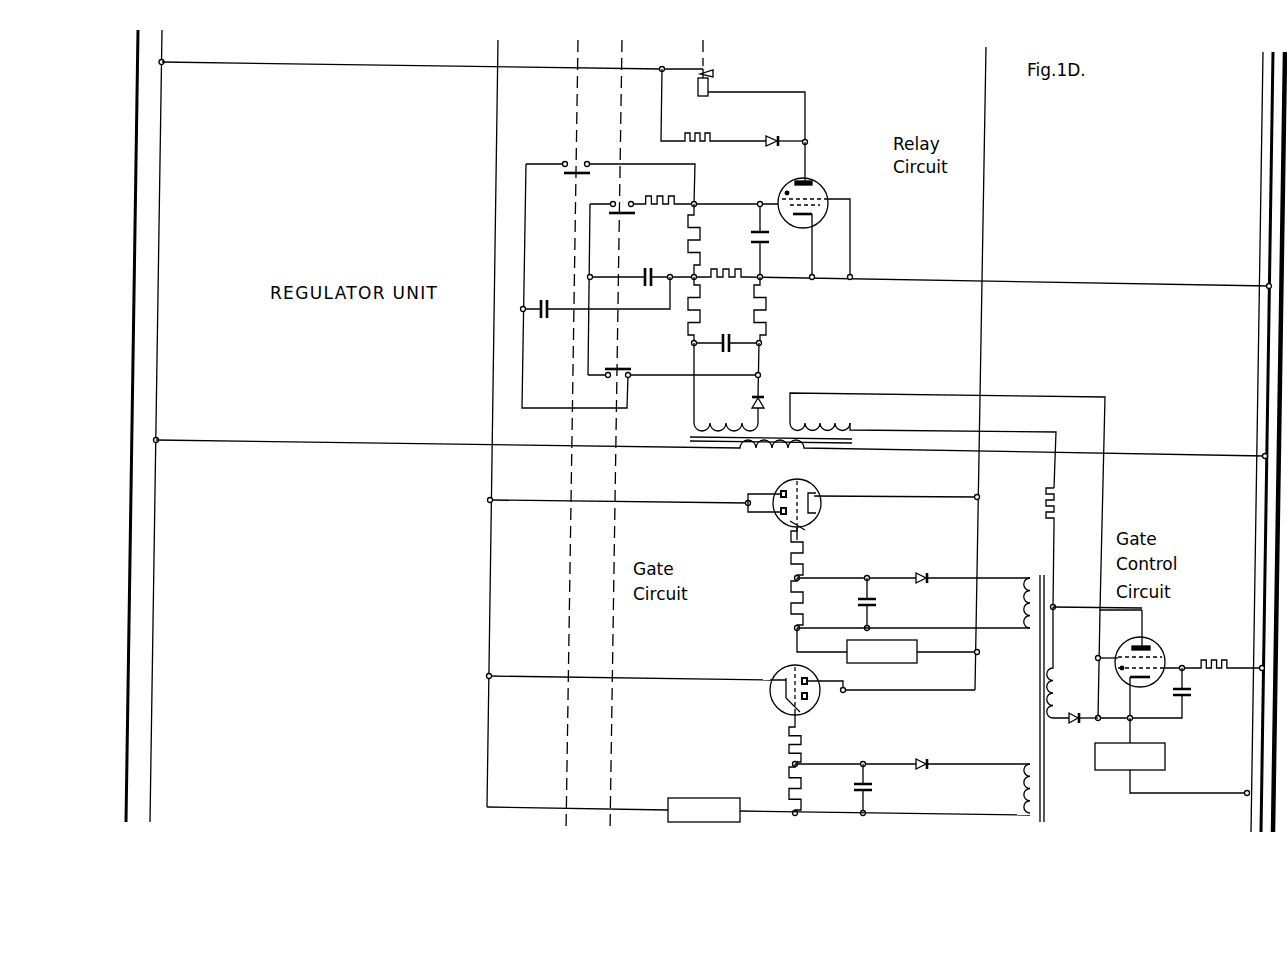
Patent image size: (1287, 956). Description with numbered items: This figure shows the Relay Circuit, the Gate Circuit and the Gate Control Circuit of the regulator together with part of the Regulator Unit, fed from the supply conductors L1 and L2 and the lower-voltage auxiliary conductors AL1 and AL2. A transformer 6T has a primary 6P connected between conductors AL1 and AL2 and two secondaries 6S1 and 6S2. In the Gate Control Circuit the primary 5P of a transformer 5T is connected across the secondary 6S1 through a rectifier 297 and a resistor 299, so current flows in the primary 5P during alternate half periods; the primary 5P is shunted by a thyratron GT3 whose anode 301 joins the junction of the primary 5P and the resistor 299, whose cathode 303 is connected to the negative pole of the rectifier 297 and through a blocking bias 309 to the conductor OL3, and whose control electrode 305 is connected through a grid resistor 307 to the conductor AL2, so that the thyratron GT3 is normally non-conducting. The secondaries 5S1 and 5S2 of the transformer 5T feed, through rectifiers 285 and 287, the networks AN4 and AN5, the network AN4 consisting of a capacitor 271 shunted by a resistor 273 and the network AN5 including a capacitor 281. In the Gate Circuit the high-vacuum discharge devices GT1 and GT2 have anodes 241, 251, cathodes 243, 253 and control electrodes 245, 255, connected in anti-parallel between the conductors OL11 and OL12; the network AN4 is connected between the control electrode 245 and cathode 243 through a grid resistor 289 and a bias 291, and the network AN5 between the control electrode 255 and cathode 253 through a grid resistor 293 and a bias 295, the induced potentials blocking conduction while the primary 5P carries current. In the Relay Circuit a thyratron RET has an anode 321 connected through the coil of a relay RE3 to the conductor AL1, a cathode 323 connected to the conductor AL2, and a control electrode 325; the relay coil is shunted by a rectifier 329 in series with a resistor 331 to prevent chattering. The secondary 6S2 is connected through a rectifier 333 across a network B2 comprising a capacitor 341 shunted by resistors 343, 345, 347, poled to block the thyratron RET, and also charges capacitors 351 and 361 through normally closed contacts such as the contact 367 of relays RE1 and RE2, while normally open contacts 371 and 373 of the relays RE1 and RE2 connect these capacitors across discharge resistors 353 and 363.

The conductor L1 is at (136, 189).
The conductor AL1 is at (158, 388).
The conductor L2 is at (1283, 107).
The conductor AL2 is at (1272, 183).
The conductor OL3 is at (1254, 350).
The conductor OL11 is at (985, 247).
The conductor OL12 is at (497, 140).
The relay RE1 is at (566, 728).
The relay RE2 is at (612, 732).
The relay RE3 is at (715, 73).
The resistor 331 is at (695, 133).
The rectifier 329 is at (772, 134).
The anode 321 is at (793, 182).
The thyratron RET is at (810, 181).
The cathode 323 is at (800, 218).
The control electrode 325 is at (818, 218).
The normally open contact 371 is at (570, 178).
The normally open contact 373 is at (628, 216).
The normally closed contact 367 is at (625, 371).
The discharge resistor 353 is at (655, 198).
The discharge resistor 363 is at (695, 232).
The resistor 345 is at (716, 270).
The capacitor 361 is at (657, 262).
The capacitor 351 is at (560, 300).
The network B2 is at (735, 306).
The resistor 347 is at (690, 315).
The resistor 343 is at (761, 316).
The capacitor 341 is at (733, 344).
The rectifier 333 is at (761, 401).
The secondary 6S2 is at (708, 424).
The secondary 6S1 is at (808, 424).
The transformer 6T is at (690, 438).
The primary 6P is at (748, 456).
The electric discharge device GT1 is at (818, 490).
The anode 241 is at (779, 513).
The cathode 243 is at (822, 506).
The control electrode 245 is at (804, 522).
The grid resistor 289 is at (804, 560).
The rectifier 285 is at (920, 573).
The resistor 273 is at (791, 604).
The network AN4 is at (841, 611).
The capacitor 271 is at (876, 600).
The secondary 5S1 is at (1022, 604).
The transformer 5T is at (1013, 728).
The resistor 299 is at (1045, 504).
The bias 291 is at (908, 664).
The electric discharge device GT2 is at (776, 668).
The cathode 253 is at (771, 690).
The anode 251 is at (810, 699).
The control electrode 255 is at (782, 702).
The grid resistor 293 is at (802, 740).
The rectifier 287 is at (922, 760).
The network AN5 is at (845, 791).
The capacitor 281 is at (874, 789).
The secondary 5S2 is at (1022, 793).
The bias 295 is at (683, 800).
The thyratron GT3 is at (1142, 640).
The anode 301 is at (1135, 645).
The control electrode 305 is at (1155, 667).
The cathode 303 is at (1138, 679).
The grid resistor 307 is at (1215, 672).
The primary 5P is at (1050, 716).
The rectifier 297 is at (1077, 723).
The blocking bias 309 is at (1165, 755).